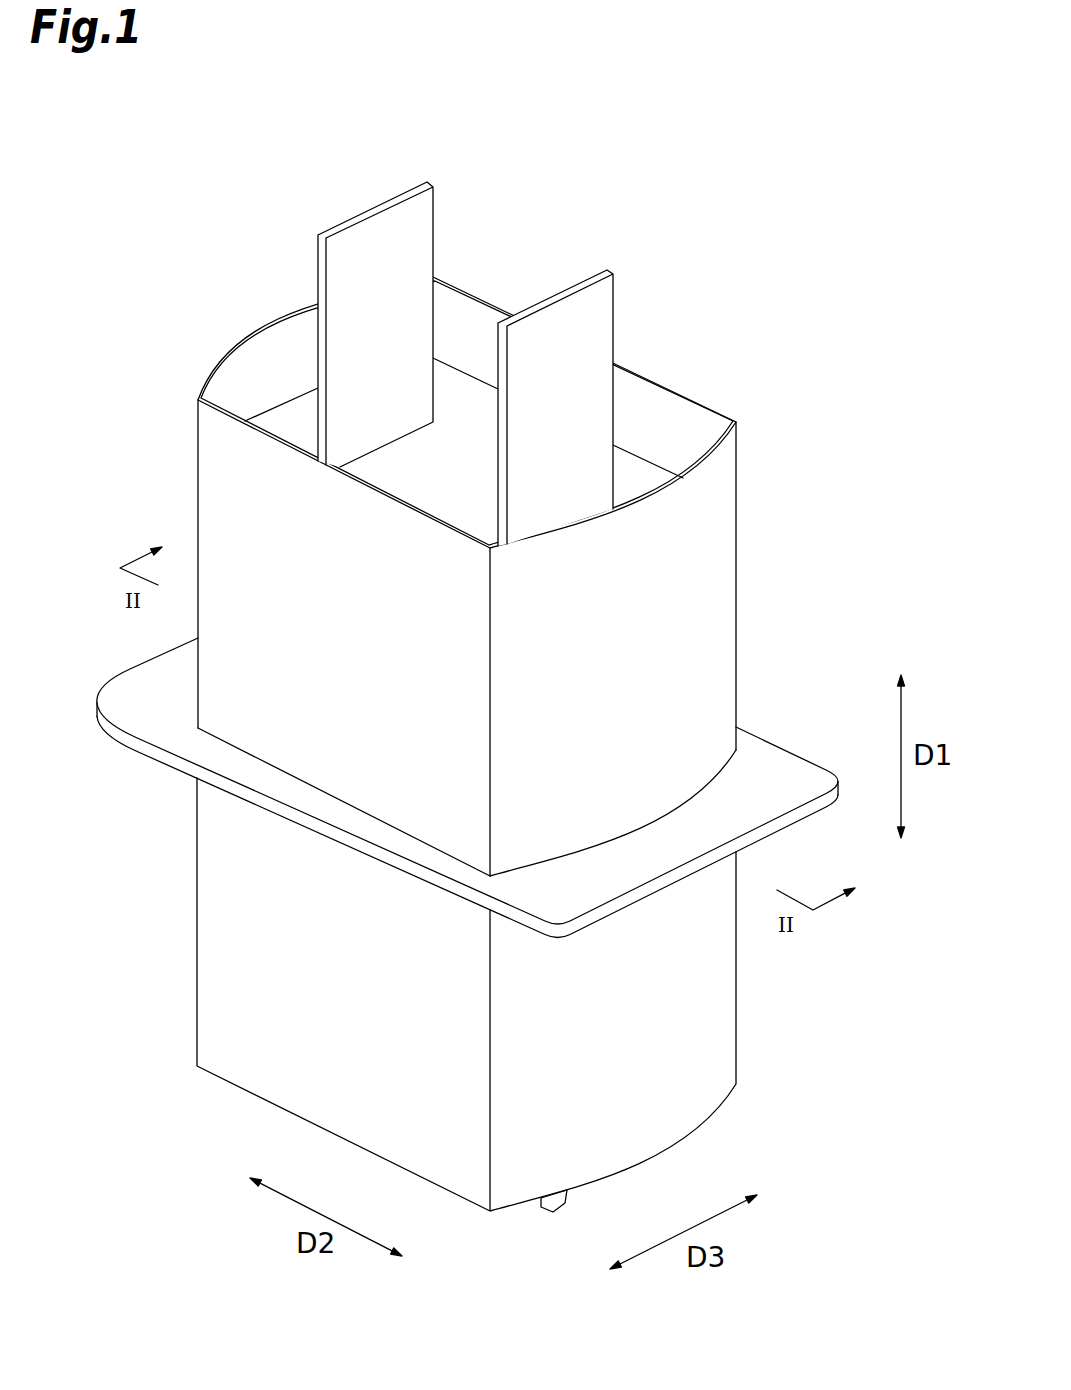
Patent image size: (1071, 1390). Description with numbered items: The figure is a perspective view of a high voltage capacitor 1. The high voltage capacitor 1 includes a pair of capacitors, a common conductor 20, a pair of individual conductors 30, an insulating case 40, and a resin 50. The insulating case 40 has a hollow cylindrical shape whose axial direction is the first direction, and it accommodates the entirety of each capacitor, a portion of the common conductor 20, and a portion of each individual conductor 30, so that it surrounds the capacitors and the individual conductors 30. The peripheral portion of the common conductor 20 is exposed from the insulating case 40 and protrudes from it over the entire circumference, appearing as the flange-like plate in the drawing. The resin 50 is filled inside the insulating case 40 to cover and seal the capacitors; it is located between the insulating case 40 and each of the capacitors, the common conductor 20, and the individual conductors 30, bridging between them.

The high voltage capacitor 1 is at (762, 292).
The common conductor 20 is at (773, 767).
The individual conductors 30 is at (396, 196).
The insulating case 40 is at (703, 557).
The resin 50 is at (450, 463).